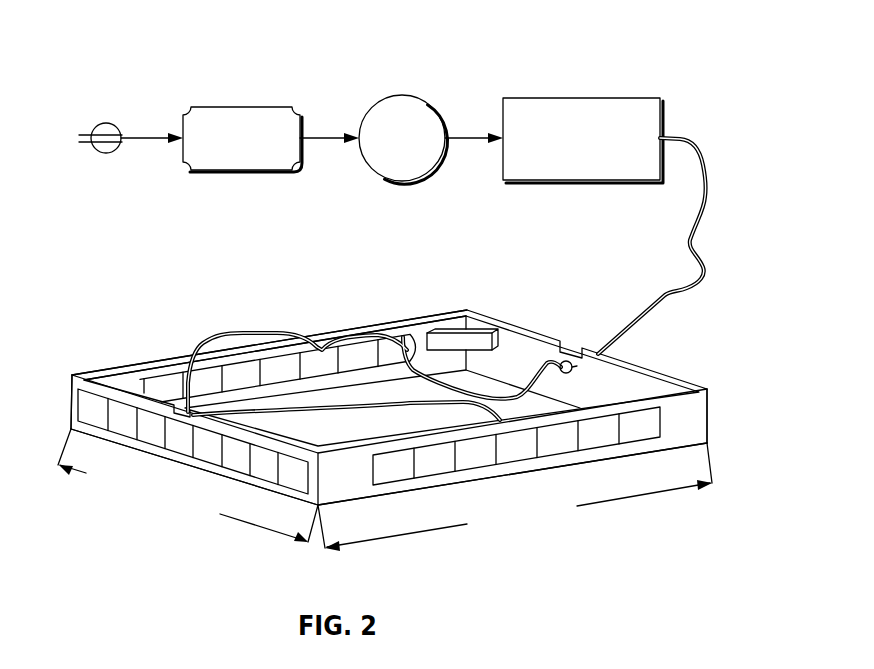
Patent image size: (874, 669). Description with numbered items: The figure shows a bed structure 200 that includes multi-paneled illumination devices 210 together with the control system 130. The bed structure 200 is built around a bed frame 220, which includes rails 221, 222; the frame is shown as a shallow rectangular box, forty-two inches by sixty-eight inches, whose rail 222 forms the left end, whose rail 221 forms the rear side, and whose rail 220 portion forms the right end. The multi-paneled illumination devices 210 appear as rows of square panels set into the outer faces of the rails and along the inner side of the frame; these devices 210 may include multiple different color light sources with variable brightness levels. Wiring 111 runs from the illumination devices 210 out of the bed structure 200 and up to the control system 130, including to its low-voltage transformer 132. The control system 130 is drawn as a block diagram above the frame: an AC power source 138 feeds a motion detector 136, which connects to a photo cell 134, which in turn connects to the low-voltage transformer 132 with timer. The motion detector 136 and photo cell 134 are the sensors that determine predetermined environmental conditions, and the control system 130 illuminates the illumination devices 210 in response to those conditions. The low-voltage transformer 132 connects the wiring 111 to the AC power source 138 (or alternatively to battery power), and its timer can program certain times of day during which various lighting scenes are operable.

The control system 130 is at (153, 77).
The AC power source 138 is at (105, 123).
The motion detector 136 is at (241, 107).
The photo cell 134 is at (402, 95).
The low-voltage transformer 132 is at (583, 98).
The wiring 111 is at (702, 201).
The bed structure 200 is at (166, 312).
The rail 221 is at (150, 362).
The rail 222 is at (72, 403).
The bed frame 220 is at (695, 417).
The multi-paneled illumination devices 210 is at (175, 433).